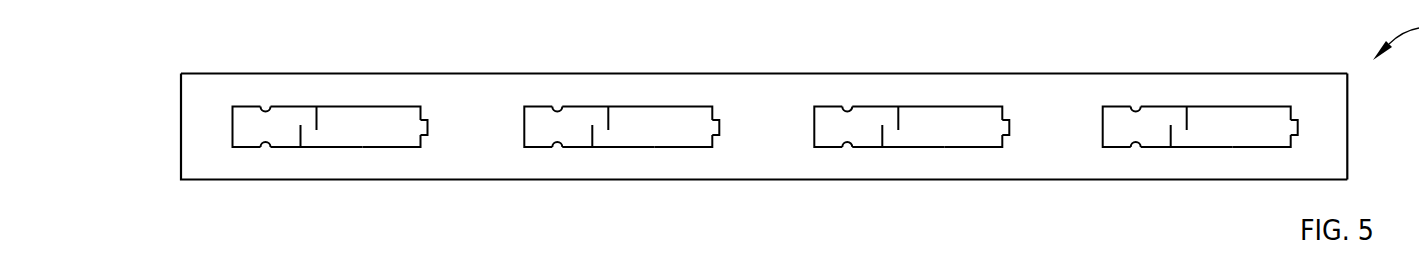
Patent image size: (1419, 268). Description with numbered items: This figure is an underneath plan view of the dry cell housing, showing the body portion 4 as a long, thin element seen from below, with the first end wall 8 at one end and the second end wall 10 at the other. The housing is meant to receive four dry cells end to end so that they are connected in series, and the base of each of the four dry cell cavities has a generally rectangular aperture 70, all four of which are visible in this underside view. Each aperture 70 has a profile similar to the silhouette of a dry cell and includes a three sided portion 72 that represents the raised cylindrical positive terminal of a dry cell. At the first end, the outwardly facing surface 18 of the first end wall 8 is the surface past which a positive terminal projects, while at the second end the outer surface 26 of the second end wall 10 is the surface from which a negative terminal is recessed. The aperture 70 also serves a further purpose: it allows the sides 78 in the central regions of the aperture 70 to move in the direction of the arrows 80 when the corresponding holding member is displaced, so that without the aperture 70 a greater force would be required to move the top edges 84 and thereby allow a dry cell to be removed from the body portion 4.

The body portion 4 is at (190, 73).
The first end wall 8 is at (1348, 153).
The second end wall 10 is at (181, 108).
The outwardly facing surface 18 is at (1348, 105).
The outer surface 26 is at (181, 165).
The aperture 70 is at (371, 117).
The three sided portion 72 is at (428, 125).
The sides 78 is at (261, 110).
The arrows 80 is at (317, 127).
The top edges 84 is at (978, 104).